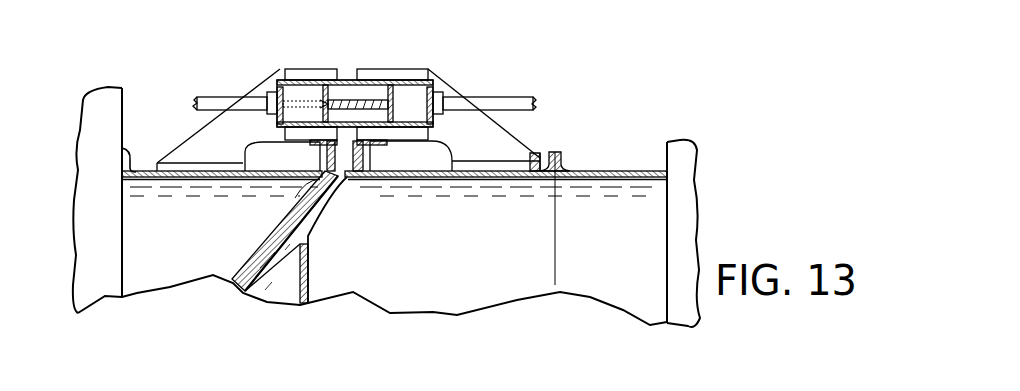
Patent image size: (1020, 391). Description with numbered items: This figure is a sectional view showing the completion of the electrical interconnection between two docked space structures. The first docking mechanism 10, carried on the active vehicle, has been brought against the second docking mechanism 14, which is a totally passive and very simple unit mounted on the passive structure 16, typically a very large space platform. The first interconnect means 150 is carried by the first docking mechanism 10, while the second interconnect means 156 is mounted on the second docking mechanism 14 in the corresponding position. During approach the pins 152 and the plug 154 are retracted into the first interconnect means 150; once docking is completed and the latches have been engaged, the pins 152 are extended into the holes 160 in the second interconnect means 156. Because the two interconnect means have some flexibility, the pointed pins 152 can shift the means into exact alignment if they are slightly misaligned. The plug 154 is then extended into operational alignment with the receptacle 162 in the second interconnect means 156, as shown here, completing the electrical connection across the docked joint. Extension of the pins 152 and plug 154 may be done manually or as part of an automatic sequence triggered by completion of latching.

The first docking mechanism 10 is at (617, 171).
The second docking mechanism 14 is at (140, 172).
The passive structure 16 is at (122, 284).
The first interconnect means 150 is at (370, 70).
The pins 152 is at (408, 97).
The plug 154 is at (386, 104).
The second interconnect means 156 is at (322, 72).
The holes 160 is at (293, 87).
The receptacle 162 is at (304, 86).